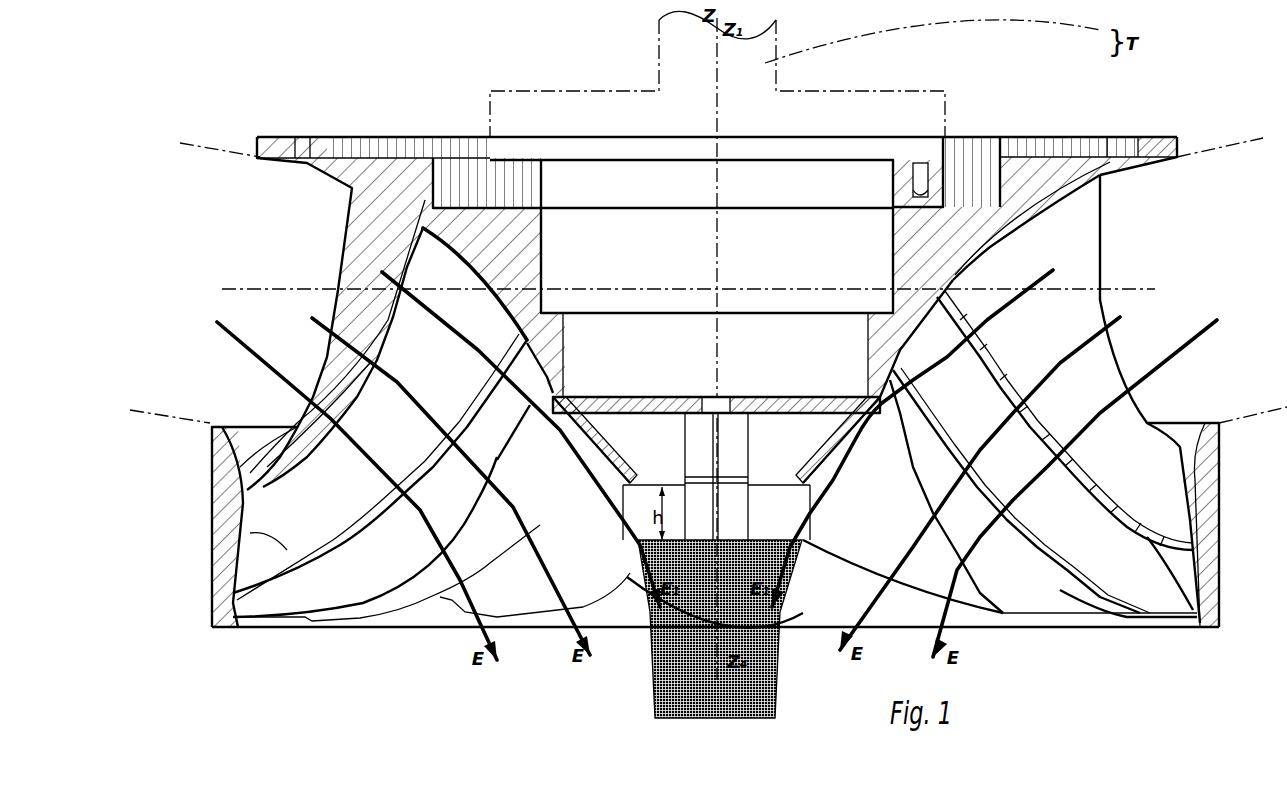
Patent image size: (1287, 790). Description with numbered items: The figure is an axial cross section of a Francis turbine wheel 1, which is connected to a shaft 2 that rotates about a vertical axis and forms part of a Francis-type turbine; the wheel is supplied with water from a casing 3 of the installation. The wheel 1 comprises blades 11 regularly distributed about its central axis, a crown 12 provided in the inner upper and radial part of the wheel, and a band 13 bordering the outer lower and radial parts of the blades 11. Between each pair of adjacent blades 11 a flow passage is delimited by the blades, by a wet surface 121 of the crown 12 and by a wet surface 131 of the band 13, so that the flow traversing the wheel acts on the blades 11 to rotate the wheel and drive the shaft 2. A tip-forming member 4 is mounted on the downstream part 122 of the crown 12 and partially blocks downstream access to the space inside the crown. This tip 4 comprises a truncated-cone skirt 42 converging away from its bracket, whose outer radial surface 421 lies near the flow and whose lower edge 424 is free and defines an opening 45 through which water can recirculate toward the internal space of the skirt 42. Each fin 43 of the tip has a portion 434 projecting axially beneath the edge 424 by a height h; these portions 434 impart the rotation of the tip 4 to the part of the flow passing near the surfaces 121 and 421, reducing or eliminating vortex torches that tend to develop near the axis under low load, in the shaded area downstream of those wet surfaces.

The Francis turbine wheel 1 is at (1036, 121).
The shaft 2 is at (938, 41).
The casing 3 is at (187, 160).
The tip-forming member 4 is at (612, 512).
The blades 11 is at (1090, 353).
The crown 12 is at (483, 233).
The band 13 is at (212, 498).
The skirt 42 is at (845, 410).
The fin 43 is at (713, 447).
The opening 45 is at (697, 547).
The wet surface of the crown 121 is at (1066, 201).
The downstream part of the crown 122 is at (555, 385).
The wet surface of the band 131 is at (1188, 577).
The outer radial surface of the skirt 421 is at (850, 440).
The lower edge of the skirt 424 is at (812, 532).
The projecting portion of the fin 434 is at (767, 510).